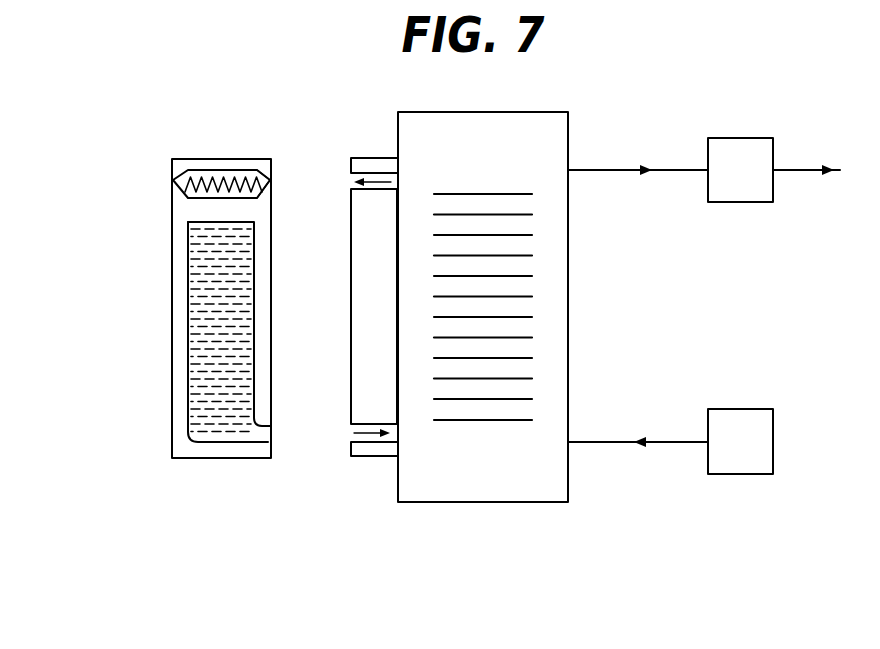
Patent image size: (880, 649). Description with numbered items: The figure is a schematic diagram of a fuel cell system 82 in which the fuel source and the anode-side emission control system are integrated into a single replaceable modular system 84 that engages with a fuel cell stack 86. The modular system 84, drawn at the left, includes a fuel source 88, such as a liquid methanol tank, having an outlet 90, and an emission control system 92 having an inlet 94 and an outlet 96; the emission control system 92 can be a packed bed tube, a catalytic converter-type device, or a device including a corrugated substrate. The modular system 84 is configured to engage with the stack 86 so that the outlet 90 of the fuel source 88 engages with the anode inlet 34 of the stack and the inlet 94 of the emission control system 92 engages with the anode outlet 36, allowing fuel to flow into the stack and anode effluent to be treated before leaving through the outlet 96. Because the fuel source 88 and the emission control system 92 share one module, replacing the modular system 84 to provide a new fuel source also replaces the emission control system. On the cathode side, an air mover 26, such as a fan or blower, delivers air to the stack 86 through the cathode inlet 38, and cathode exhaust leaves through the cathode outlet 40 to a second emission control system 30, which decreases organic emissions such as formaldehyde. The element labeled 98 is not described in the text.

The air mover 26 is at (773, 442).
The emission control system 30 is at (773, 148).
The anode inlet 34 is at (397, 432).
The anode outlet 36 is at (347, 181).
The cathode inlet 38 is at (668, 440).
The cathode outlet 40 is at (613, 168).
The fuel cell system 82 is at (441, 545).
The modular system 84 is at (150, 313).
The fuel cell stack 86 is at (568, 362).
The fuel source 88 is at (212, 385).
The outlet 90 is at (267, 433).
The emission control system 92 is at (228, 177).
The inlet 94 is at (268, 180).
The outlet 96 is at (171, 181).
The plate 98 is at (365, 325).